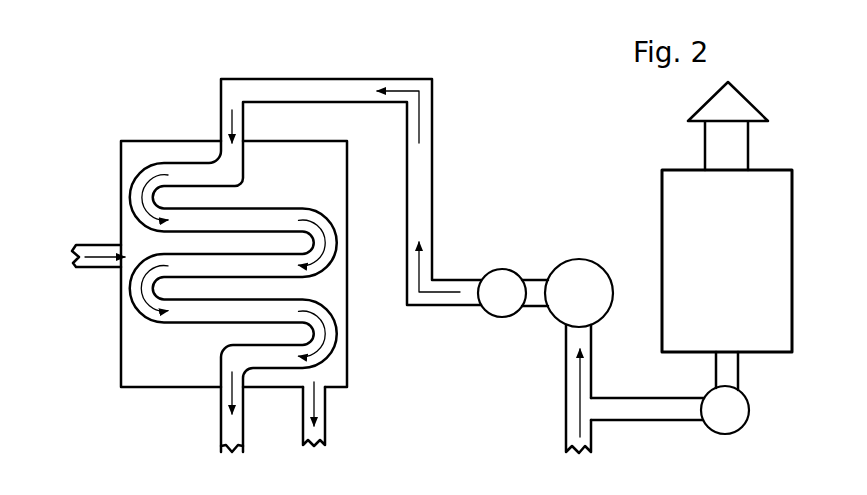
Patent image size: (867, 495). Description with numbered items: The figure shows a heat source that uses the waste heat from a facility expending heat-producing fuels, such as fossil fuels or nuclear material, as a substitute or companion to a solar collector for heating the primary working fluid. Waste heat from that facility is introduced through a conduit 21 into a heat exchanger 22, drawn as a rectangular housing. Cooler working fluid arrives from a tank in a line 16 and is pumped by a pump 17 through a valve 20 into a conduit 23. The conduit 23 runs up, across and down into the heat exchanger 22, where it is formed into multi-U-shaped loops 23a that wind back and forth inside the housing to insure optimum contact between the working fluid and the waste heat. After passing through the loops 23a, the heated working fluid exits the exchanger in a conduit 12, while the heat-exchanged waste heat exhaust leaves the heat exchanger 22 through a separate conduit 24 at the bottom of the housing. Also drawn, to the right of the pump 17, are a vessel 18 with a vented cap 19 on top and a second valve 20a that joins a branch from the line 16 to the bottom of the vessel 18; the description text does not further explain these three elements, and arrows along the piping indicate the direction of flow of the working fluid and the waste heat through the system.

The conduit 12 is at (223, 413).
The line 16 is at (567, 350).
The pump 17 is at (588, 267).
The reservoir tank 18 is at (737, 237).
The vent 19 is at (717, 147).
The valve 20 is at (498, 273).
The valve 20a is at (708, 395).
The conduit 21 is at (89, 247).
The heat exchanger 22 is at (158, 148).
The conduit 23 is at (331, 82).
The multi-U-shaped loops 23a is at (179, 320).
The conduit 24 is at (323, 410).